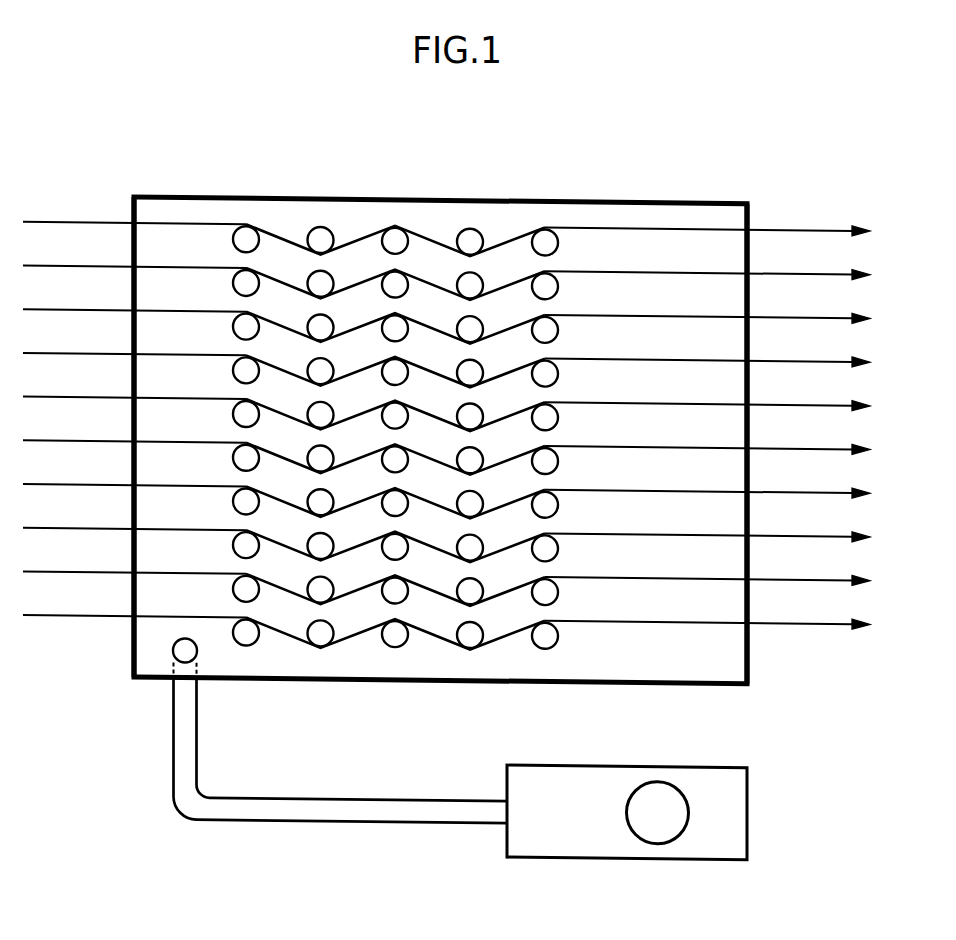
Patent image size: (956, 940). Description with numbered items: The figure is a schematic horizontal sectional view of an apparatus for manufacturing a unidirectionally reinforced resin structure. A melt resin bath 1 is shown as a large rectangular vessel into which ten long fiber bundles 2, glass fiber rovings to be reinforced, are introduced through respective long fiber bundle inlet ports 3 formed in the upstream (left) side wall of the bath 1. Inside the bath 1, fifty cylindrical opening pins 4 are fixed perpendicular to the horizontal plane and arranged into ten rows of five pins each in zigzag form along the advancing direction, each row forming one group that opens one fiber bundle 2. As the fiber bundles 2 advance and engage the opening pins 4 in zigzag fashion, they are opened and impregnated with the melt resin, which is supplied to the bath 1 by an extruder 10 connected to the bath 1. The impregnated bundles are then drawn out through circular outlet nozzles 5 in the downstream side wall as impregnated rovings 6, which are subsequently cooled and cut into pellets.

The melt resin bath 1 is at (350, 192).
The long fiber bundles 2 is at (57, 311).
The long fiber bundle inlet ports 3 is at (130, 267).
The opening pins 4 is at (468, 233).
The outlet nozzles 5 is at (750, 266).
The impregnated rovings 6 is at (820, 265).
The extruder 10 is at (727, 775).